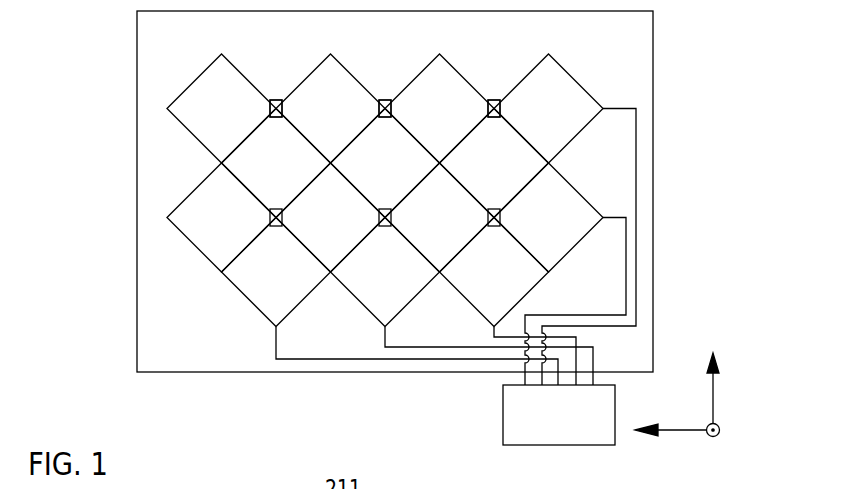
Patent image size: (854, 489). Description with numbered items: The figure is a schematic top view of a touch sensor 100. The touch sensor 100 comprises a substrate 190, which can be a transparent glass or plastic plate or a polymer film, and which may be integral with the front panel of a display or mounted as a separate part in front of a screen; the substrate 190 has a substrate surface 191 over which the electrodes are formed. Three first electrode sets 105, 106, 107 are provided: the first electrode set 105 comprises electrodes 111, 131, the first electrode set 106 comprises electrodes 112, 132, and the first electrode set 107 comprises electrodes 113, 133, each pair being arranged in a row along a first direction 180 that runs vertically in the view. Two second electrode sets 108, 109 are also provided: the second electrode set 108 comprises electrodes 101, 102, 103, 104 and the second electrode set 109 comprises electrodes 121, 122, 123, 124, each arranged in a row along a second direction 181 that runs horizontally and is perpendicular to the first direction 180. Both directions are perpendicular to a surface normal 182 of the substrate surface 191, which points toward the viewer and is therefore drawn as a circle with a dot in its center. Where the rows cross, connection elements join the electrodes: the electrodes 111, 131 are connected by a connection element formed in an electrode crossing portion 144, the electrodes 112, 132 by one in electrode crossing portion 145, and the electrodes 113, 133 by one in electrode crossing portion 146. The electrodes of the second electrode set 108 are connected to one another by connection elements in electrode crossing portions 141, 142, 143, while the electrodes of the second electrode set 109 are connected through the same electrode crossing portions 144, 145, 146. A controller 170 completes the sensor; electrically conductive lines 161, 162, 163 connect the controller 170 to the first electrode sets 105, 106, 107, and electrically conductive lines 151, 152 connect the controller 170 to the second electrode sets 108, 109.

The touch sensor 100 is at (130, 329).
The electrode 101 is at (241, 118).
The electrode 102 is at (350, 118).
The electrode 103 is at (459, 118).
The electrode 104 is at (568, 118).
The first electrode set 105 is at (273, 97).
The first electrode set 106 is at (382, 97).
The first electrode set 107 is at (491, 97).
The second electrode set 108 is at (132, 112).
The second electrode set 109 is at (132, 224).
The electrode 111 is at (295, 172).
The electrode 112 is at (404, 172).
The electrode 113 is at (513, 172).
The electrode 121 is at (241, 226).
The electrode 122 is at (350, 226).
The electrode 123 is at (459, 226).
The electrode 124 is at (568, 226).
The electrode 131 is at (295, 298).
The electrode 132 is at (404, 298).
The electrode 133 is at (513, 298).
The electrode crossing portion 141 is at (279, 98).
The electrode crossing portion 142 is at (388, 98).
The electrode crossing portion 143 is at (497, 98).
The electrode crossing portion 144 is at (276, 226).
The electrode crossing portion 145 is at (385, 226).
The electrode crossing portion 146 is at (494, 226).
The electrically conductive line 151 is at (636, 148).
The electrically conductive line 152 is at (626, 262).
The electrically conductive line 161 is at (300, 360).
The electrically conductive line 162 is at (418, 347).
The electrically conductive line 163 is at (506, 337).
The controller 170 is at (577, 429).
The first direction 180 is at (713, 387).
The second direction 181 is at (683, 432).
The surface normal 182 is at (720, 431).
The substrate 190 is at (190, 373).
The substrate surface 191 is at (194, 355).